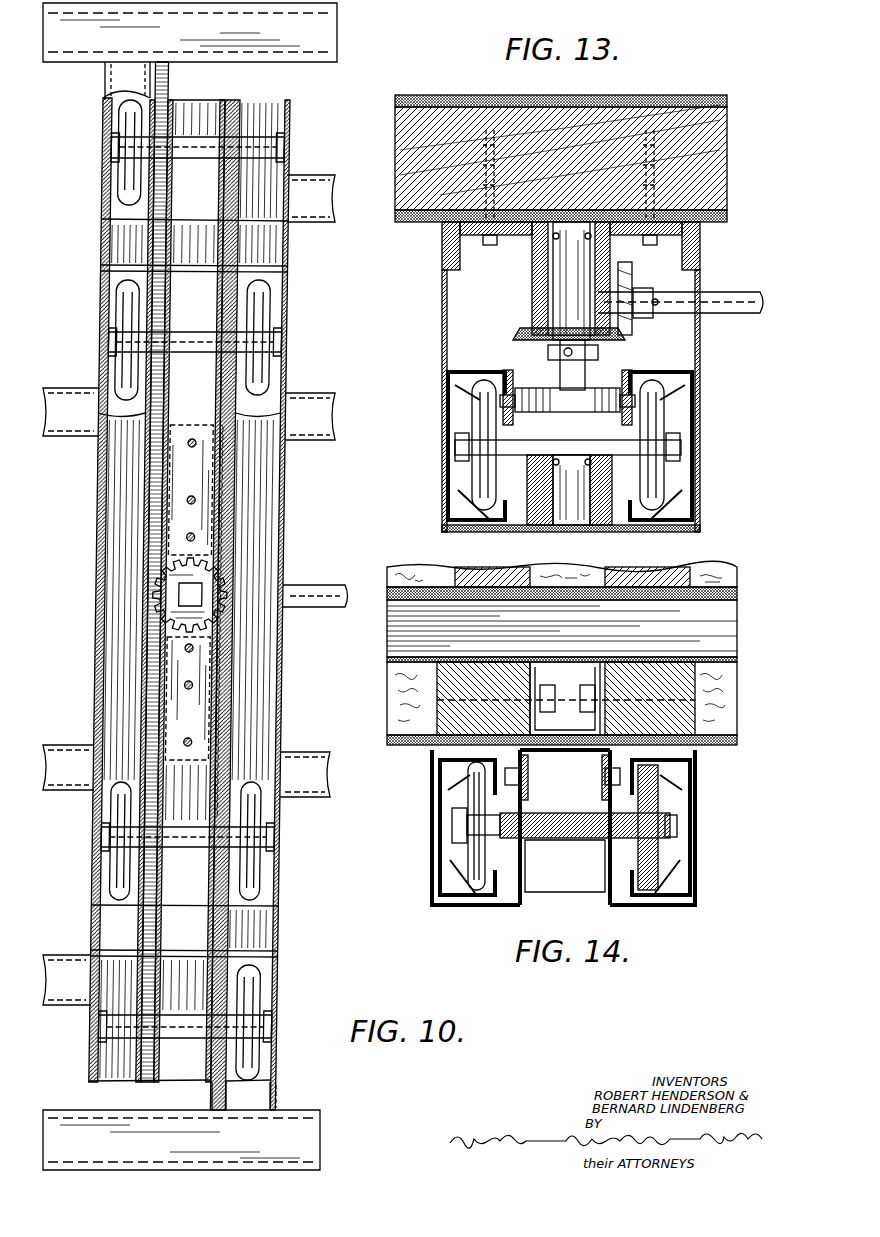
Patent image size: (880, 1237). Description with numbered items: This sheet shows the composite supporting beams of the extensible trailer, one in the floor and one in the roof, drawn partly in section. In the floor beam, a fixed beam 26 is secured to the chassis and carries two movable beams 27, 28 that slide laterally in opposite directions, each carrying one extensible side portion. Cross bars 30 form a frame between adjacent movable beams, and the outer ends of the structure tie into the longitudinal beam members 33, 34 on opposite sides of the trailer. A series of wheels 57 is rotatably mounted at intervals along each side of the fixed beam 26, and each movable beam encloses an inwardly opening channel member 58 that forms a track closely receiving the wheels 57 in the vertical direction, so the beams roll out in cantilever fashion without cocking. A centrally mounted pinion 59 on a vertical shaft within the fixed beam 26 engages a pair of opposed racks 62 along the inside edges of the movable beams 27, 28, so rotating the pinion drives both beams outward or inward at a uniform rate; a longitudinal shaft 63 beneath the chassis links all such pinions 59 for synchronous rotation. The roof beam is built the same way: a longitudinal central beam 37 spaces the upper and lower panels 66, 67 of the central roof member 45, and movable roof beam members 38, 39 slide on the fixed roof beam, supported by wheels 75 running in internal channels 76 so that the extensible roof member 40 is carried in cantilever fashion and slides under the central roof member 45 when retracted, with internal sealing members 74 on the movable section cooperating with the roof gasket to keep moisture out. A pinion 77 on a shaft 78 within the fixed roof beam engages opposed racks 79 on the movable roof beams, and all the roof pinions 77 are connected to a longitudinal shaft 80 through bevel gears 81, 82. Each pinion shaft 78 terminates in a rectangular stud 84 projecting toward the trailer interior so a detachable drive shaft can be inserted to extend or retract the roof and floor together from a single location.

In FIG. 10, the fixed beam 26 is at (218, 93).
In FIG. 10, the movable beam 27 is at (297, 109).
In FIG. 10, the movable beam 28 is at (96, 100).
In FIG. 10, the cross bars 30 is at (316, 222).
In FIG. 10, the longitudinal beam member 33 is at (305, 1118).
In FIG. 10, the longitudinal beam member 34 is at (340, 50).
In FIG. 13, the longitudinal central beam 37 is at (468, 118).
In FIG. 13, the movable roof beam member 38 is at (448, 506).
In FIG. 14, the movable roof beam member 38 is at (440, 781).
In FIG. 13, the movable roof beam member 39 is at (690, 510).
In FIG. 14, the movable roof beam member 39 is at (690, 880).
In FIG. 14, the extensible roof member 40 is at (752, 706).
In FIG. 13, the central roof member 45 is at (584, 150).
In FIG. 14, the central roof member 45 is at (738, 578).
In FIG. 10, the wheels 57 is at (128, 313).
In FIG. 10, the channel member 58 is at (112, 680).
In FIG. 10, the pinion 59 is at (222, 586).
In FIG. 10, the racks 62 is at (228, 497).
In FIG. 10, the longitudinal shaft 63 is at (304, 590).
In FIG. 13, the upper panel 66 is at (682, 104).
In FIG. 13, the lower panel 67 is at (727, 220).
In FIG. 14, the internal sealing members 74 is at (713, 636).
In FIG. 13, the wheels 75 is at (478, 416).
In FIG. 14, the wheels 75 is at (655, 796).
In FIG. 13, the internal channels 76 is at (470, 386).
In FIG. 14, the internal channels 76 is at (683, 774).
In FIG. 13, the pinion 77 is at (600, 386).
In FIG. 13, the shaft 78 is at (562, 272).
In FIG. 13, the racks 79 is at (512, 375).
In FIG. 14, the racks 79 is at (524, 780).
In FIG. 13, the longitudinal shaft 80 is at (722, 310).
In FIG. 13, the bevel gear 81 is at (525, 332).
In FIG. 13, the bevel gear 82 is at (634, 292).
In FIG. 13, the rectangular stud 84 is at (565, 520).